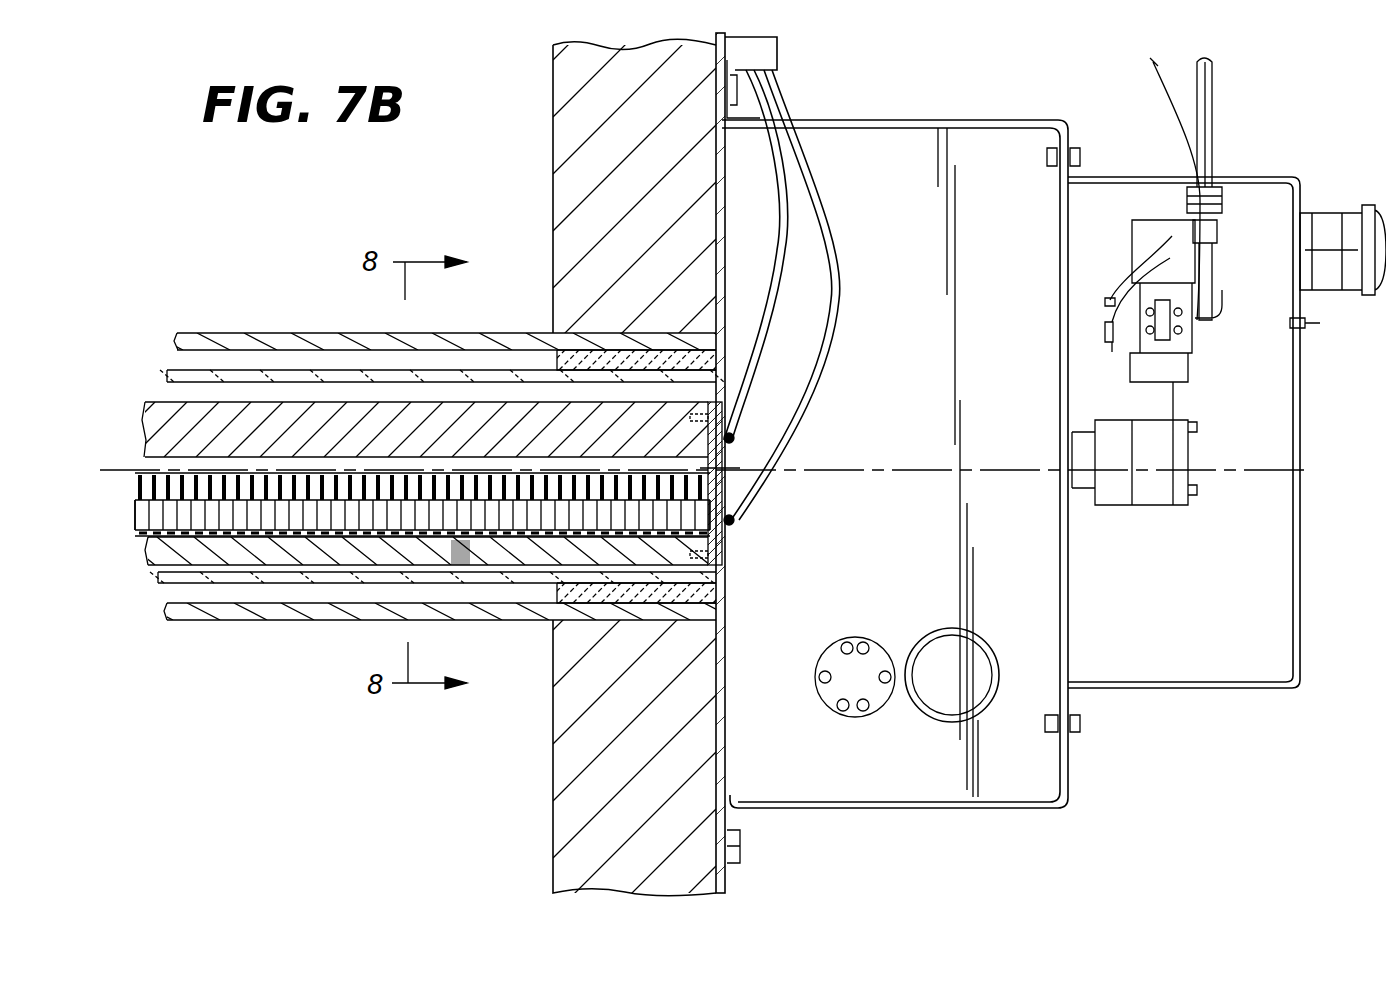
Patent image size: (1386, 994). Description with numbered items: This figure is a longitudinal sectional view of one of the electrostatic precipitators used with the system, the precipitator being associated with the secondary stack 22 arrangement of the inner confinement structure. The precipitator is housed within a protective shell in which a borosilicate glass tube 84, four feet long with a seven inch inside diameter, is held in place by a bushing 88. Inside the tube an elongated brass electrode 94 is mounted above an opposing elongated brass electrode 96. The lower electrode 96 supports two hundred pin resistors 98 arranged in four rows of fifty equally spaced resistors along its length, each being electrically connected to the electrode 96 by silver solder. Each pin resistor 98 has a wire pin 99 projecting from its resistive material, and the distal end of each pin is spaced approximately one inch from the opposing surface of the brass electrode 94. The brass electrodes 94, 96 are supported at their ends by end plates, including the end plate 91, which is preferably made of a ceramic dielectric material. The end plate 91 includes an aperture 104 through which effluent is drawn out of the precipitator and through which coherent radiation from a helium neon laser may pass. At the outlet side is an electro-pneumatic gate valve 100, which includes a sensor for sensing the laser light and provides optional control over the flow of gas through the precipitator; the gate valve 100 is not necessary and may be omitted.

The secondary stack 22 is at (199, 342).
The borosilicate glass tube 84 is at (281, 375).
The bushing 88 is at (548, 352).
The elongated brass electrode 94 is at (148, 405).
The elongated brass electrode 96 is at (150, 540).
The end plate 91 is at (727, 438).
The aperture 104 is at (722, 468).
The wire pin 99 is at (705, 485).
The pin resistor 98 is at (705, 522).
The gate valve 100 is at (1202, 416).